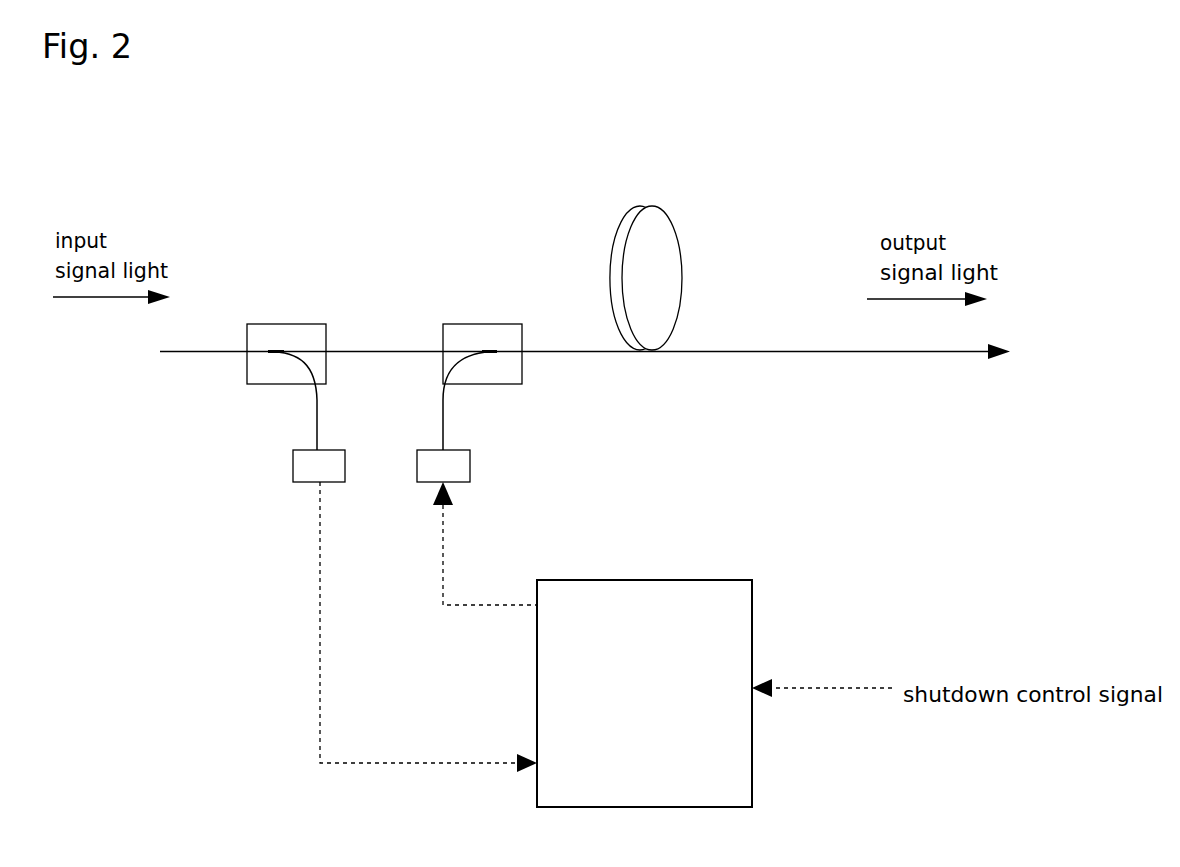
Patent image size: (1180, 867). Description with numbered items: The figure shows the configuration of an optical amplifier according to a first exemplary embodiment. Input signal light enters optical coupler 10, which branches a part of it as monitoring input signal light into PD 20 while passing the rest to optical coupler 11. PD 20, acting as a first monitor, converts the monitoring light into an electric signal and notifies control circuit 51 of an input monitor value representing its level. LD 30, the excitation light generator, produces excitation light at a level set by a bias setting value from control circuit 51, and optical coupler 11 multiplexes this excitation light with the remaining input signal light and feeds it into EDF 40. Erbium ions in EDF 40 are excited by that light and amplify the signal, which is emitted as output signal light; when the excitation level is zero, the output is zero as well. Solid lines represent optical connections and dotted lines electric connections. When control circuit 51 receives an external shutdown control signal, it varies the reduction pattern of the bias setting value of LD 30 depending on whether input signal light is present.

The optical coupler 10 is at (275, 306).
The optical coupler 11 is at (477, 305).
The PD (Photo Diode) 20 is at (293, 468).
The LD (Laser Diode) 30 is at (470, 466).
The EDF (Erbium-Doped Fiber) 40 is at (642, 202).
The control circuit 51 is at (703, 578).